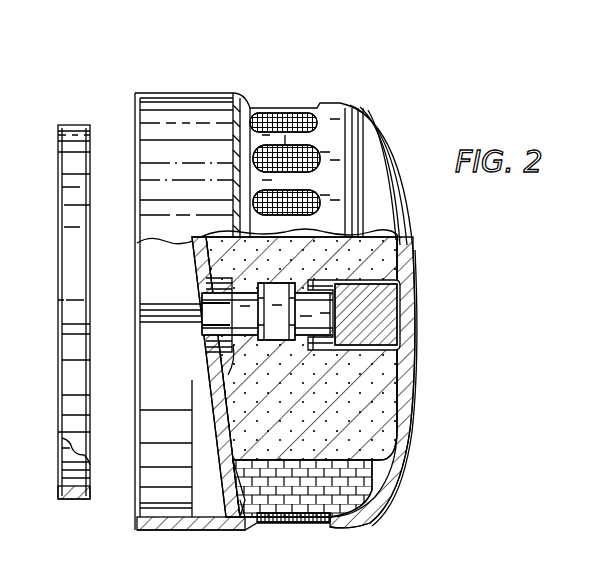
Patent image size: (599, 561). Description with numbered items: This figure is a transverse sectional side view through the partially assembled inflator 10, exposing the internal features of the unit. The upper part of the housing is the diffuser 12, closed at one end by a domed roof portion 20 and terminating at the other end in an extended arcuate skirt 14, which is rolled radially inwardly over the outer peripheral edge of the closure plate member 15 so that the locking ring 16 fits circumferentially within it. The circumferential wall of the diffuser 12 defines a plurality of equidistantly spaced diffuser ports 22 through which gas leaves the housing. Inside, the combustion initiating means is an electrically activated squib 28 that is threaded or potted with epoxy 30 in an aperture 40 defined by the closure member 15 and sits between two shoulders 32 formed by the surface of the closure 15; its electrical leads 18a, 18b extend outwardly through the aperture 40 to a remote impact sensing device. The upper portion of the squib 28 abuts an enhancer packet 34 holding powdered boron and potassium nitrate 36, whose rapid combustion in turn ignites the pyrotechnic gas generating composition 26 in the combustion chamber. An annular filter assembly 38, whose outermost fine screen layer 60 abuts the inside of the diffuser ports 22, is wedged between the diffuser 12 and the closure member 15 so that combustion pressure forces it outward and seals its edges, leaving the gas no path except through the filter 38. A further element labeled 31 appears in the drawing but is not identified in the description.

The inflator 10 is at (193, 72).
The diffuser member 12 is at (382, 62).
The skirt portion 14 is at (145, 515).
The closure plate member 15 is at (206, 497).
The locking ring 16 is at (62, 175).
The electrical lead 18a is at (150, 322).
The electrical lead 18b is at (147, 302).
The domed roof portion 20 is at (397, 213).
The diffuser ports 22 is at (403, 130).
The pyrotechnic gas generating composition 26 is at (362, 407).
The squib 28 is at (203, 345).
The epoxy 30 is at (239, 371).
The washer 31 is at (243, 278).
The shoulders 32 is at (202, 280).
The enhancer packet 34 is at (400, 250).
The boron and potassium nitrate 36 is at (377, 308).
The annular filter assembly 38 is at (398, 465).
The aperture 40 is at (187, 322).
The outermost layer of screen material 60 is at (287, 118).